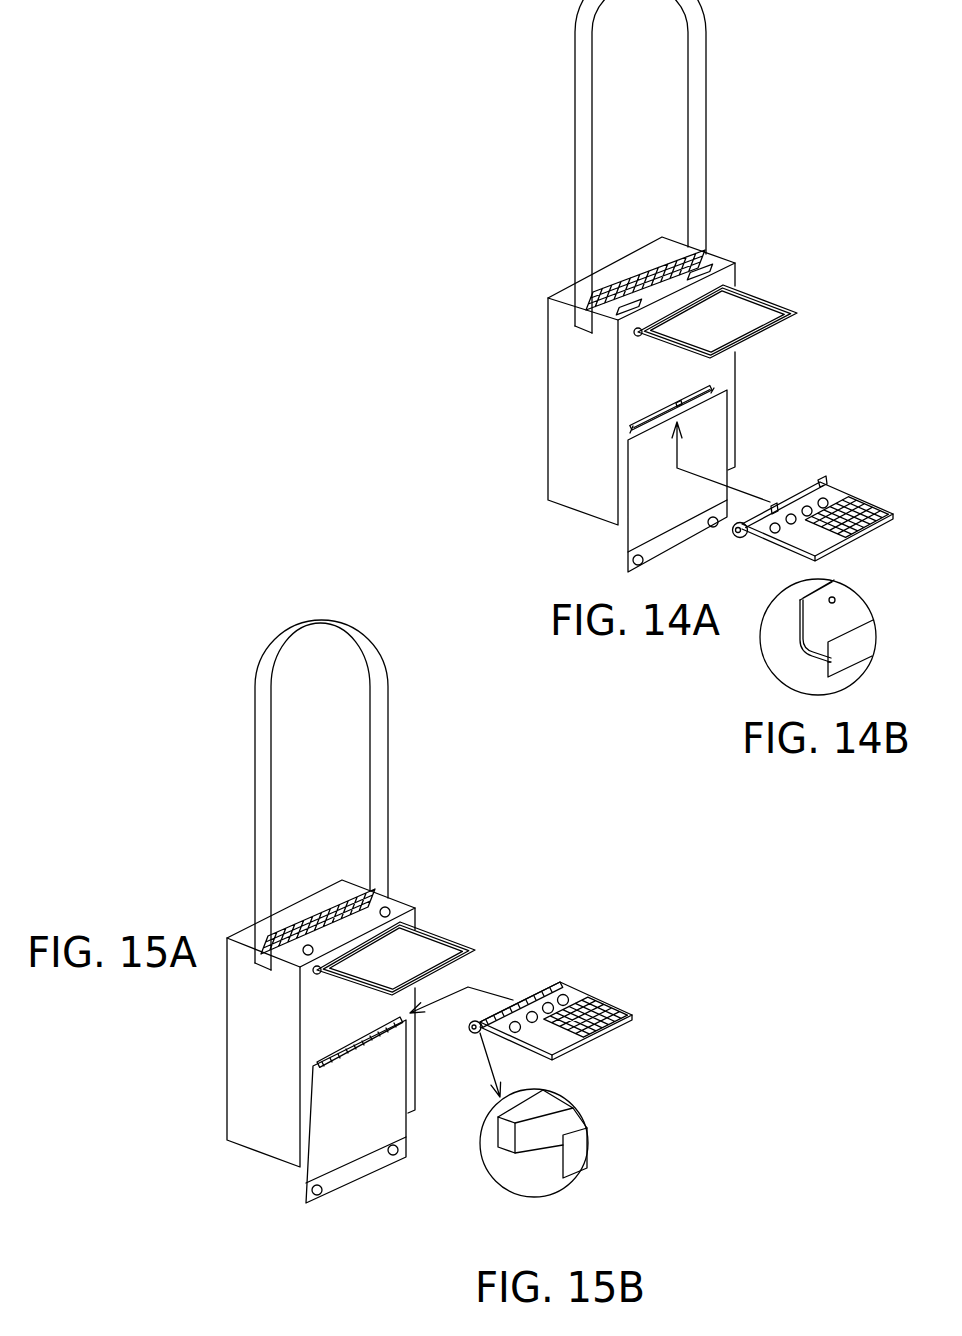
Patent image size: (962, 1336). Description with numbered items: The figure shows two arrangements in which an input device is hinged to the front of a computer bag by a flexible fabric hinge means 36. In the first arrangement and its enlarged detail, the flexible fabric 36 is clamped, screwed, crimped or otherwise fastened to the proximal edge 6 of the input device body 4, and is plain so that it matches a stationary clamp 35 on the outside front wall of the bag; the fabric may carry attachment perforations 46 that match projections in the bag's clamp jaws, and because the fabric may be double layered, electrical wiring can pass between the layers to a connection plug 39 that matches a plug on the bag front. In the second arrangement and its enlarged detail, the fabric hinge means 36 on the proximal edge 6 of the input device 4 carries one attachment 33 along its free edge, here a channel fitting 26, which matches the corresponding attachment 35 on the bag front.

In FIG. 14A, the input device body 4 is at (809, 494).
In FIG. 15A, the input device body 4 is at (554, 991).
In FIG. 14A, the proximal edge 6 is at (830, 492).
In FIG. 15A, the proximal edge 6 is at (562, 980).
In FIG. 15B, the channel fitting 26 is at (510, 1128).
In FIG. 15A, the attachment 33 is at (523, 995).
In FIG. 14A, the stationary clamp 35 is at (655, 412).
In FIG. 15A, the stationary clamp 35 is at (313, 1064).
In FIG. 14A, the flexible fabric hinge means 36 is at (808, 492).
In FIG. 14B, the flexible fabric hinge means 36 is at (816, 640).
In FIG. 15B, the flexible fabric hinge means 36 is at (545, 1133).
In FIG. 14A, the connection plug 39 is at (775, 505).
In FIG. 14B, the attachment perforations 46 is at (836, 599).